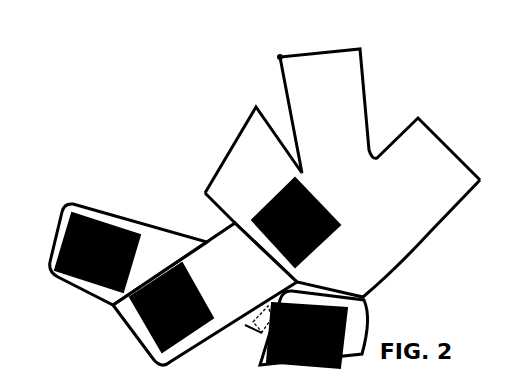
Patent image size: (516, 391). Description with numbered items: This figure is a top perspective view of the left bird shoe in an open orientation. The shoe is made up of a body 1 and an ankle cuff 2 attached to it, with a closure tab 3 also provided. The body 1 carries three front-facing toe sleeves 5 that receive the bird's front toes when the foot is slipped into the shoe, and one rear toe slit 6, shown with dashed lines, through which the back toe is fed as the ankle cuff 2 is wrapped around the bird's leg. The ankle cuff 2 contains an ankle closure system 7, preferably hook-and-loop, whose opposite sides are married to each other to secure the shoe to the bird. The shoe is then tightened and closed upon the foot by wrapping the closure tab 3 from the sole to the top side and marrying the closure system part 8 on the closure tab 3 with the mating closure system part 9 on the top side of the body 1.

The body 1 is at (374, 222).
The ankle cuff 2 is at (60, 228).
The closure tab 3 is at (214, 292).
The toe sleeves 5 is at (233, 148).
The rear toe slit 6 is at (262, 330).
The ankle closure system 7 is at (201, 290).
The closure system part on closure tab 8 is at (171, 307).
The closure system part on body top side 9 is at (296, 222).